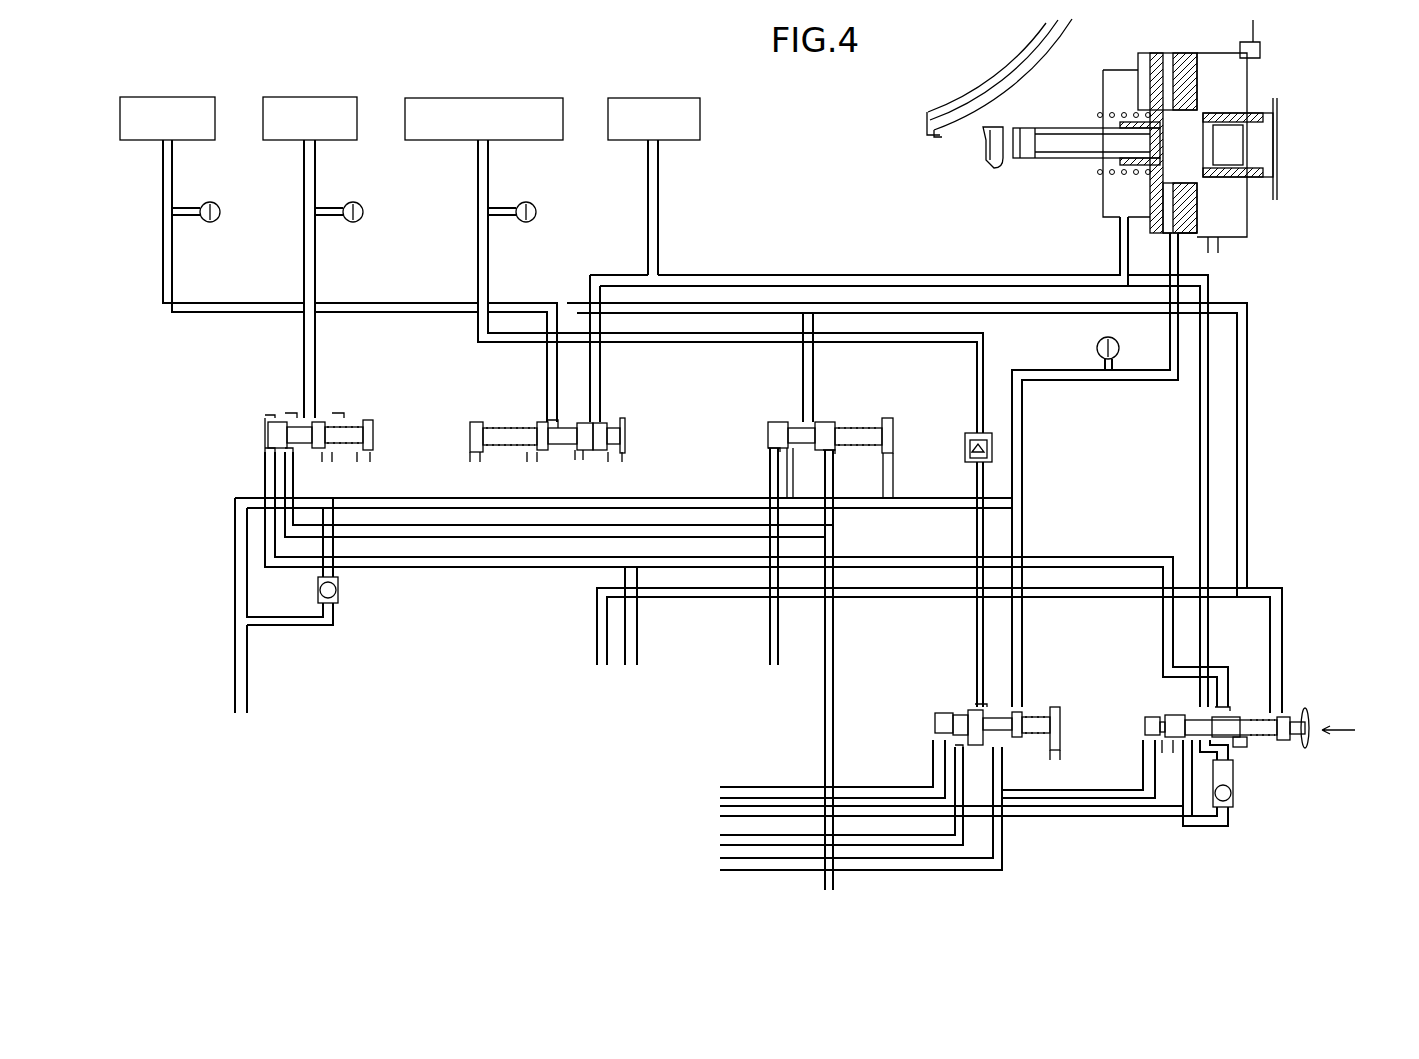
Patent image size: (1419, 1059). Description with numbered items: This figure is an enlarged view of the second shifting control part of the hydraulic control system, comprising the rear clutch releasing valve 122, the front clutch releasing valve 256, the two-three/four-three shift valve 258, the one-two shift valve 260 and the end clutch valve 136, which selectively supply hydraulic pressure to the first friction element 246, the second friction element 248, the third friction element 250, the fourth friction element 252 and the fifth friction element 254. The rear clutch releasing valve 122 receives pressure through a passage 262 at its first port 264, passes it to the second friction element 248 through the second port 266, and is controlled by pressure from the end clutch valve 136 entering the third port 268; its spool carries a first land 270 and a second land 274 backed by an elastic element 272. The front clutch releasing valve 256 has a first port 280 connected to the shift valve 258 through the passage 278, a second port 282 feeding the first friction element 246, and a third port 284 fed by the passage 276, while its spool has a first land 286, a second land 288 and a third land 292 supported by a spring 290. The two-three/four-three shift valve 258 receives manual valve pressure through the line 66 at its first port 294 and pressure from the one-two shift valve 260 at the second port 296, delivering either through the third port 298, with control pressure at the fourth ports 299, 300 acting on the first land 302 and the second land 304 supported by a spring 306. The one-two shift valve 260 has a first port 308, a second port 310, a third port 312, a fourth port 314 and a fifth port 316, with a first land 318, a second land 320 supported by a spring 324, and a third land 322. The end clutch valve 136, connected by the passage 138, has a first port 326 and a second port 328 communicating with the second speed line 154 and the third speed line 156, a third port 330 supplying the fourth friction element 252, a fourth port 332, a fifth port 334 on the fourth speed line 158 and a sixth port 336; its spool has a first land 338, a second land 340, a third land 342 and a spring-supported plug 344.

The rear pressure passage 66 is at (250, 675).
The rear clutch releasing valve 122 is at (250, 441).
The end clutch valve 136 is at (1361, 731).
The passage 138 is at (1097, 599).
The second speed line 154 is at (763, 787).
The third speed line 156 is at (1088, 818).
The fourth speed line 158 is at (1097, 560).
The first friction element 246 is at (166, 97).
The second friction element 248 is at (309, 97).
The third friction element 250 is at (483, 98).
The fourth friction element 252 is at (656, 98).
The fifth friction element 254 is at (1066, 195).
The front clutch releasing valve 256 is at (473, 402).
The 2-3/4-3 shift valve 258 is at (750, 441).
The 1-2 shift valve 260 is at (921, 697).
The passage 262 is at (822, 720).
The first port 264 is at (290, 450).
The second port 266 is at (300, 415).
The third port 268 is at (268, 450).
The first land 270 is at (272, 422).
The elastic element 272 is at (367, 420).
The second land 274 is at (320, 420).
The passage 276 is at (1200, 448).
The passage 278 is at (1047, 313).
The first port 280 is at (578, 420).
The second port 282 is at (554, 420).
The third port 284 is at (597, 425).
The first land 286 is at (579, 460).
The second land 288 is at (622, 440).
The spring 290 is at (472, 445).
The third land 292 is at (540, 425).
The first port 294 is at (792, 455).
The second port 296 is at (832, 458).
The third port 298 is at (806, 415).
The fourth port 299 is at (770, 455).
The fourth port 300 is at (890, 450).
The first land 302 is at (772, 425).
The second land 304 is at (826, 422).
The spring 306 is at (872, 425).
The first port 308 is at (962, 742).
The second port 310 is at (998, 752).
The third port 312 is at (978, 706).
The fourth port 314 is at (1014, 708).
The fifth port 316 is at (940, 740).
The first land 318 is at (972, 712).
The second land 320 is at (1022, 714).
The third land 322 is at (936, 720).
The spring 324 is at (1058, 714).
The first port 326 is at (1146, 750).
The second port 328 is at (1188, 750).
The third port 330 is at (1204, 712).
The fourth port 332 is at (1280, 712).
The fifth port 334 is at (1228, 712).
The sixth port 336 is at (1240, 712).
The first land 338 is at (1146, 728).
The second land 340 is at (1172, 718).
The third land 342 is at (1240, 745).
The plug 344 is at (1300, 745).